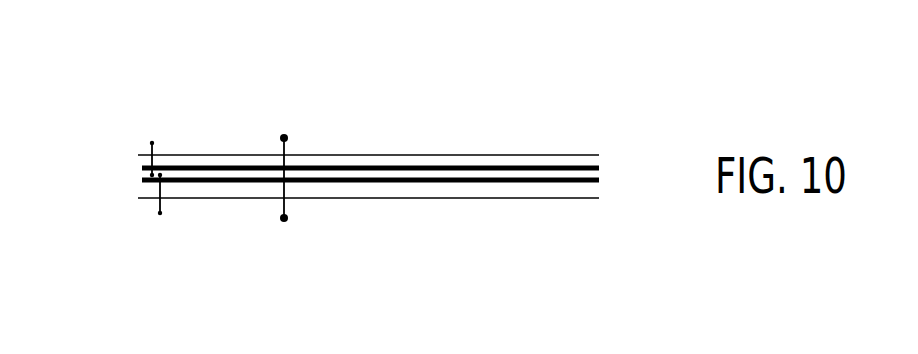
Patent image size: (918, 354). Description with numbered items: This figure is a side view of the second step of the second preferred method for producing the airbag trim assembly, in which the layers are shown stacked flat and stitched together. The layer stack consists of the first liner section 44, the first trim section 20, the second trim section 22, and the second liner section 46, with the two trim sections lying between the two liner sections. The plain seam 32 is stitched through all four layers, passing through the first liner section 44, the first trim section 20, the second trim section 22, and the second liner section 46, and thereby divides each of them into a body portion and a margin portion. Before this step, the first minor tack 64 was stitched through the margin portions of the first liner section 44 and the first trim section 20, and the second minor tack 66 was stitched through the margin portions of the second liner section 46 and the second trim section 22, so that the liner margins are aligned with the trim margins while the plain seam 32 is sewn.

The first trim section 20 is at (476, 155).
The second trim section 22 is at (467, 181).
The plain seam 32 is at (284, 138).
The first liner section 44 is at (382, 155).
The second liner section 46 is at (380, 198).
The first minor tack 64 is at (152, 143).
The second minor tack 66 is at (160, 213).